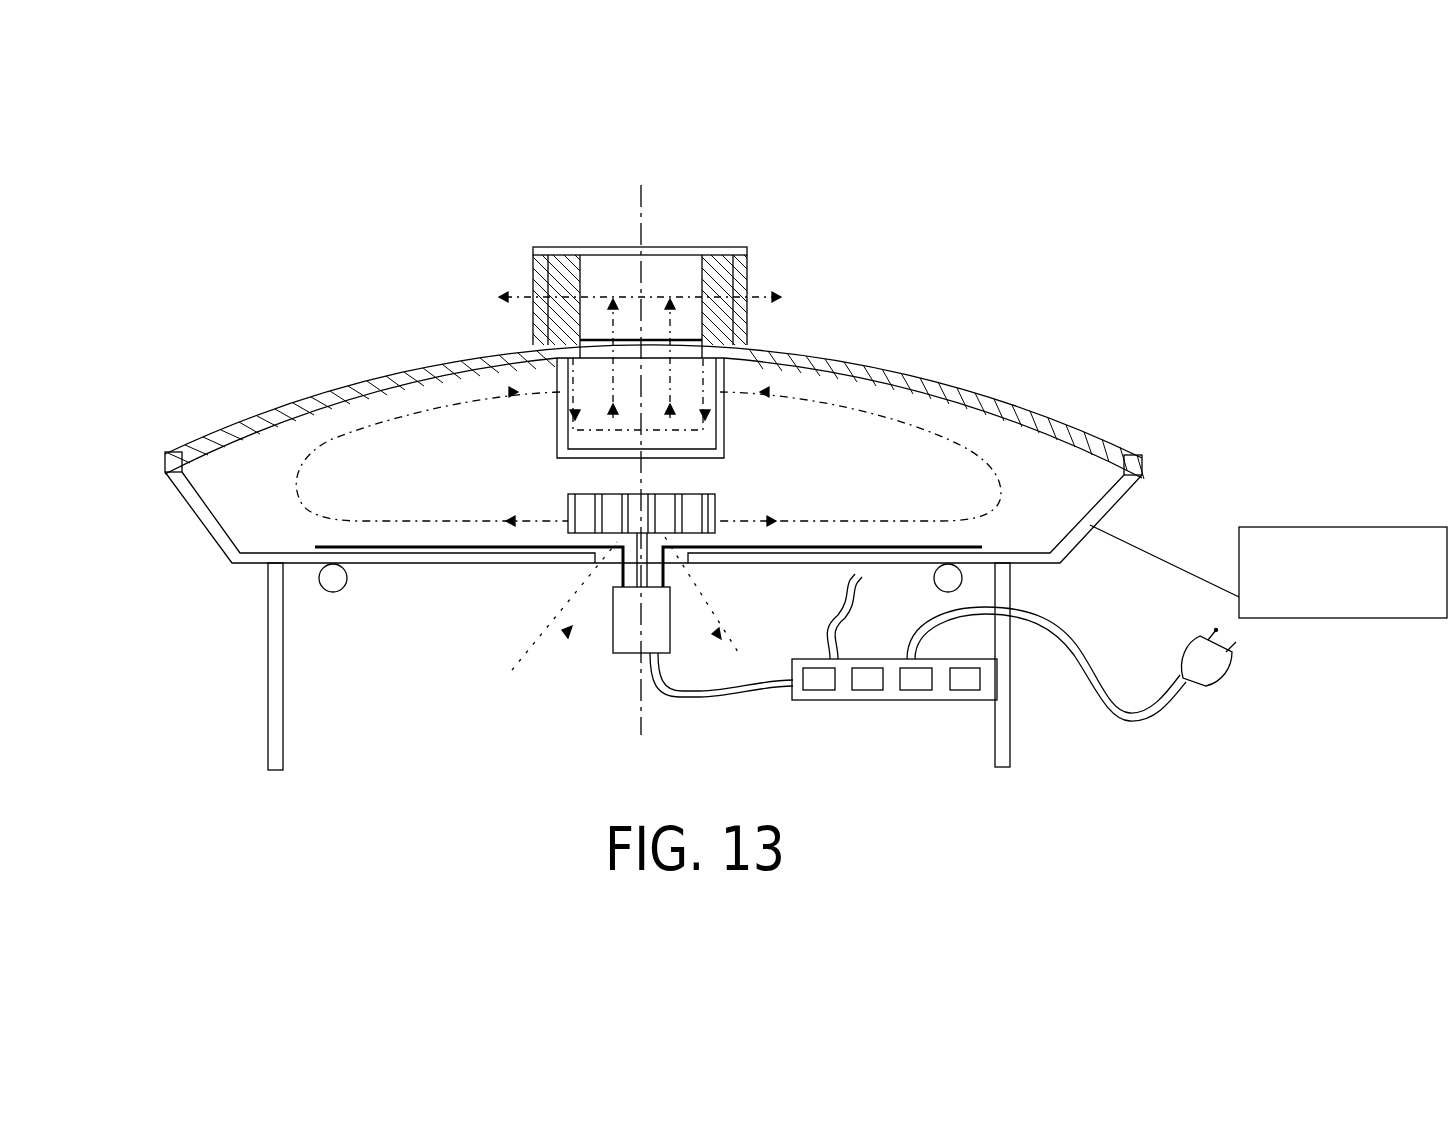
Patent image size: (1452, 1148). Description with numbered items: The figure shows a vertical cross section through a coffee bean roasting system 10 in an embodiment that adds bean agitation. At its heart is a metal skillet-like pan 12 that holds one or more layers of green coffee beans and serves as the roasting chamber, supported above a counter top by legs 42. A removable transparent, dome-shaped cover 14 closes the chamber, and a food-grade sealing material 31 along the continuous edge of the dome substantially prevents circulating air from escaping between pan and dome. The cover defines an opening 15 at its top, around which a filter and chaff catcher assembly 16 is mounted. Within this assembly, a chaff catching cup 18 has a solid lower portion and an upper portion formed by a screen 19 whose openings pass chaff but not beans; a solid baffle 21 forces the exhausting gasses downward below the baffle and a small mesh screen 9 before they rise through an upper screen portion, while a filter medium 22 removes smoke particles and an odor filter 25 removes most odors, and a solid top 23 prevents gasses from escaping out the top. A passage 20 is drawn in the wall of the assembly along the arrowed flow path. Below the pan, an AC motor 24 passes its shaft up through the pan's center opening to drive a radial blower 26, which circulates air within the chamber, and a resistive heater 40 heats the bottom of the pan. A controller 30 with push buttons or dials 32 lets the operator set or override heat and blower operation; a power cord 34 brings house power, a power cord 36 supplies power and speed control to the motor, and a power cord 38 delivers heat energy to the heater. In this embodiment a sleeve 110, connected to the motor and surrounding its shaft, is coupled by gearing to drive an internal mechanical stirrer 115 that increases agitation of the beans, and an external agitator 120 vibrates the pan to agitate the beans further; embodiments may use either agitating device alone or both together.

The small mesh screen 9 is at (685, 410).
The coffee bean roasting system 10 is at (999, 237).
The pan 12 is at (1105, 519).
The cover 14 is at (1017, 388).
The opening 15 is at (650, 343).
The filter and chaff catcher assembly 16 is at (760, 245).
The chaff catching cup 18 is at (558, 448).
The screen 19 is at (560, 404).
The cap wall passage 20 is at (580, 277).
The solid baffle 21 is at (713, 382).
The filter medium 22 is at (565, 275).
The solid top 23 is at (727, 247).
The motor 24 is at (624, 645).
The odor filter 25 is at (740, 277).
The radial blower 26 is at (715, 505).
The controller 30 is at (843, 707).
The sealing material 31 is at (1142, 465).
The push buttons or dials 32 is at (965, 685).
The power cord 34 is at (1140, 718).
The power cord 36 is at (730, 698).
The power cord 38 is at (835, 612).
The resistive heater 40 is at (340, 592).
The legs 42 is at (270, 700).
The sleeve 110 is at (627, 567).
The mechanical stirrer 115 is at (332, 547).
The external agitator 120 is at (1372, 615).